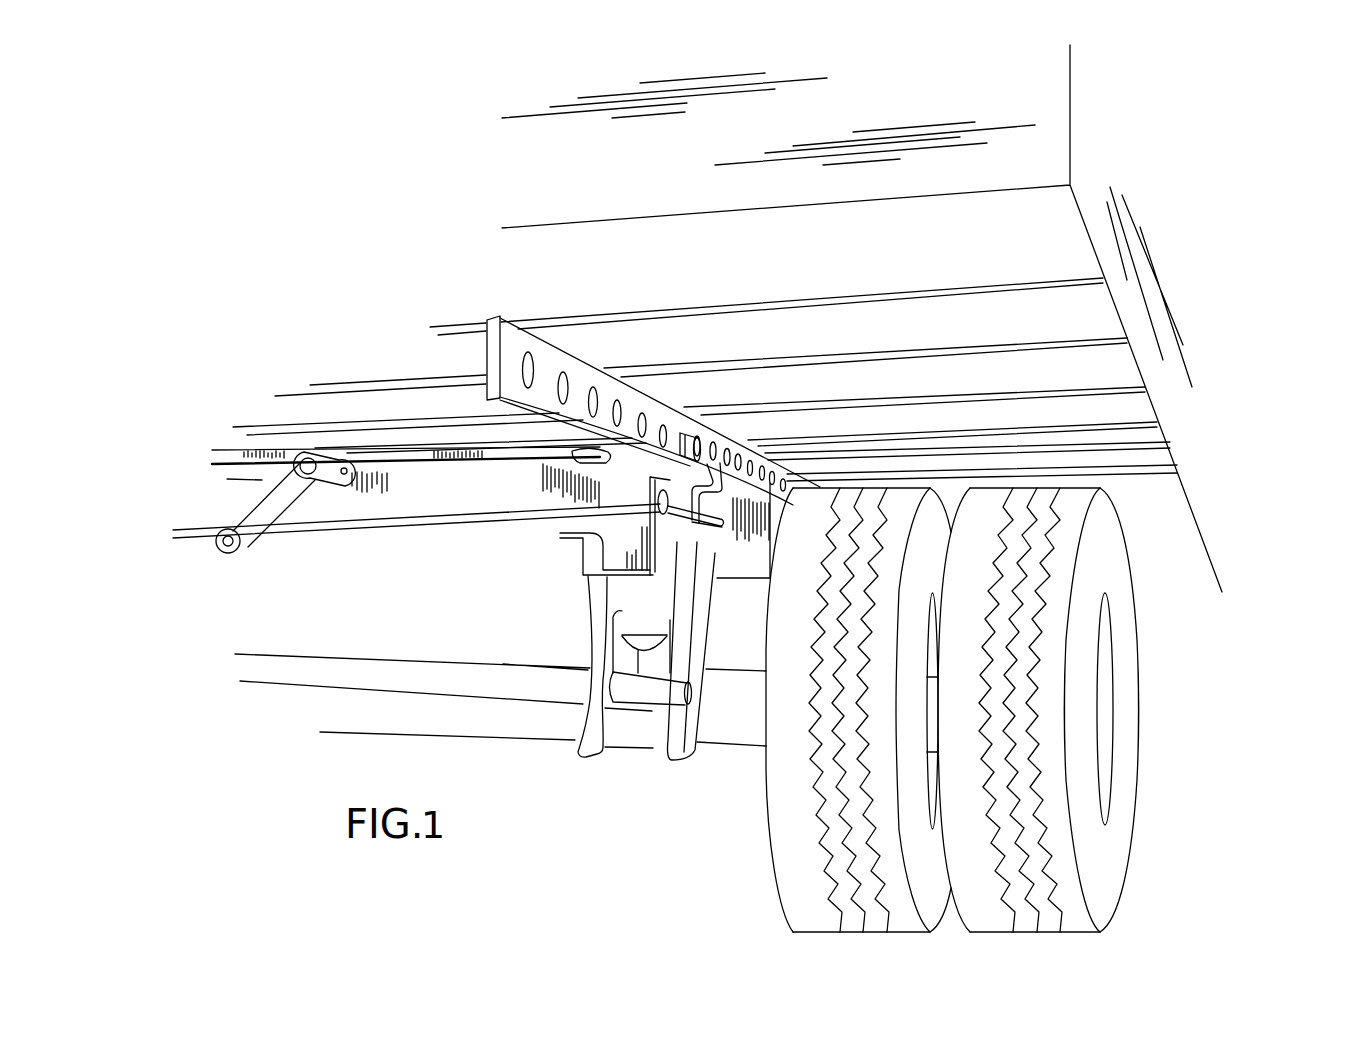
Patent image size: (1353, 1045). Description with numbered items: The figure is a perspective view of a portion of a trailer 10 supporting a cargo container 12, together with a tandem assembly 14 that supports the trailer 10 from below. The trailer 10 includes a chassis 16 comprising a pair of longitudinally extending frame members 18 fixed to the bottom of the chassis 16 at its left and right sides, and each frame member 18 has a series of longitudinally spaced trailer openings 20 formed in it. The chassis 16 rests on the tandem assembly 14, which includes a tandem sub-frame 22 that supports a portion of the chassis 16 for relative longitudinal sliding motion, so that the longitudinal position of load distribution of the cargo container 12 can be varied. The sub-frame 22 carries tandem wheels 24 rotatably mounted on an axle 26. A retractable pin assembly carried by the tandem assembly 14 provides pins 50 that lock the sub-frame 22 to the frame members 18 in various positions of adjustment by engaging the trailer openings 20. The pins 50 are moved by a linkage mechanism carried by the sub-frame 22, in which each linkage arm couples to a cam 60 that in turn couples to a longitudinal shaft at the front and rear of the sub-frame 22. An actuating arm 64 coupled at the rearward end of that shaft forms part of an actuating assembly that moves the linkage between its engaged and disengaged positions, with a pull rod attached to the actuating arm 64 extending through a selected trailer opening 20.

The trailer 10 is at (1283, 162).
The cargo container 12 is at (1060, 98).
The tandem assembly 14 is at (428, 571).
The chassis 16 is at (513, 337).
The frame members 18 is at (716, 453).
The trailer openings 20 is at (566, 392).
The tandem sub-frame 22 is at (610, 456).
The tandem wheels 24 is at (1112, 565).
The axle 26 is at (733, 735).
The pins 50 is at (689, 432).
The cam 60 is at (339, 480).
The actuating arm 64 is at (247, 524).